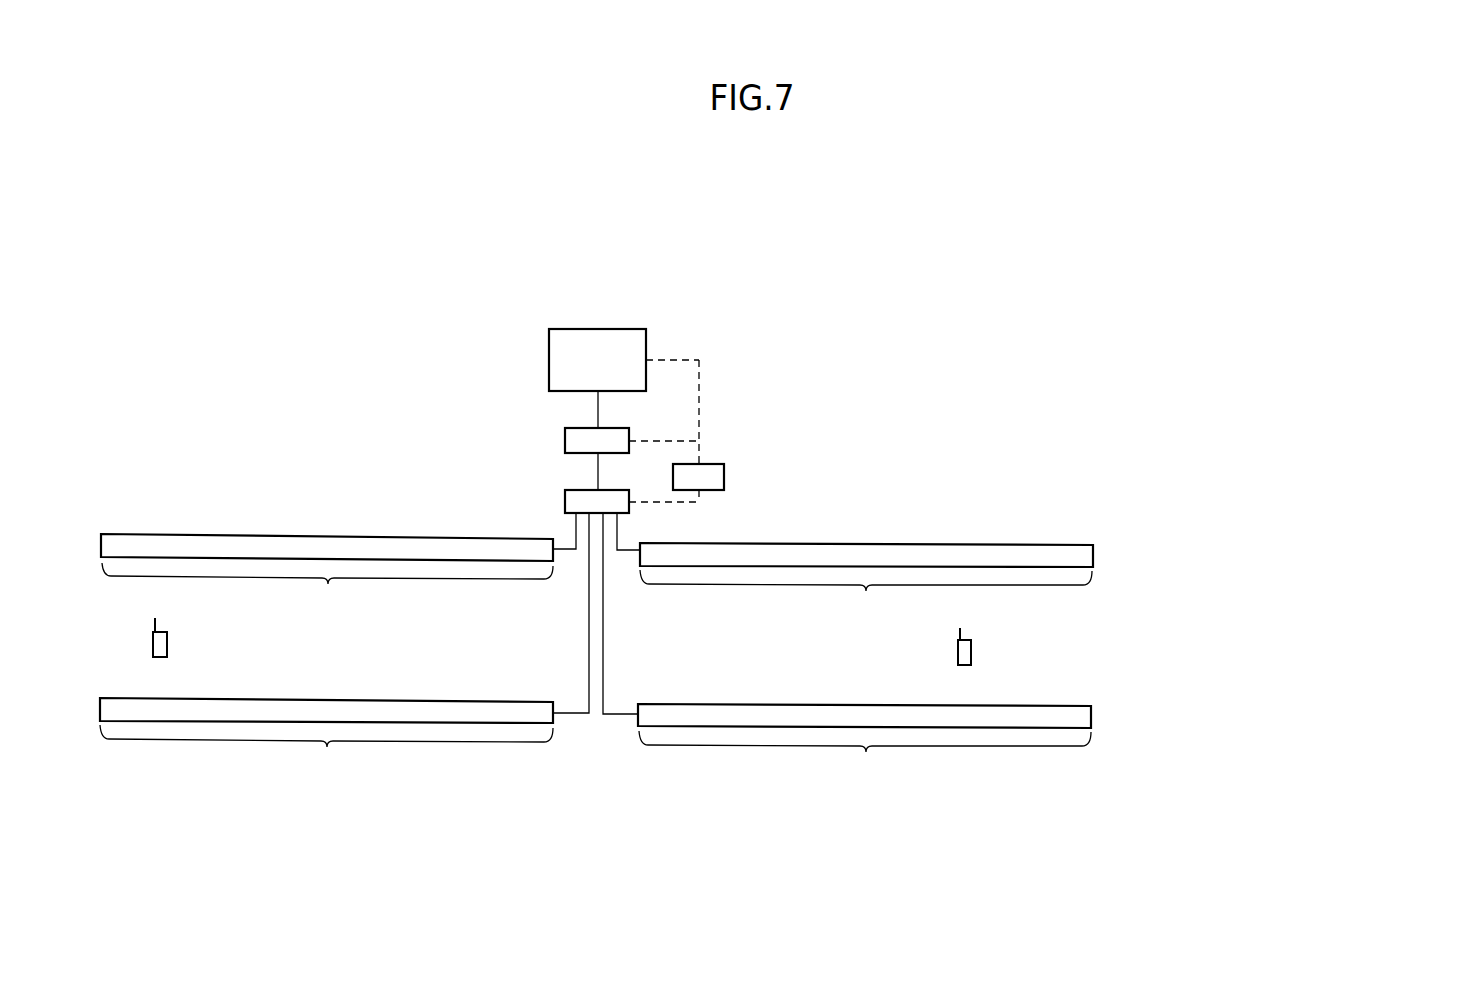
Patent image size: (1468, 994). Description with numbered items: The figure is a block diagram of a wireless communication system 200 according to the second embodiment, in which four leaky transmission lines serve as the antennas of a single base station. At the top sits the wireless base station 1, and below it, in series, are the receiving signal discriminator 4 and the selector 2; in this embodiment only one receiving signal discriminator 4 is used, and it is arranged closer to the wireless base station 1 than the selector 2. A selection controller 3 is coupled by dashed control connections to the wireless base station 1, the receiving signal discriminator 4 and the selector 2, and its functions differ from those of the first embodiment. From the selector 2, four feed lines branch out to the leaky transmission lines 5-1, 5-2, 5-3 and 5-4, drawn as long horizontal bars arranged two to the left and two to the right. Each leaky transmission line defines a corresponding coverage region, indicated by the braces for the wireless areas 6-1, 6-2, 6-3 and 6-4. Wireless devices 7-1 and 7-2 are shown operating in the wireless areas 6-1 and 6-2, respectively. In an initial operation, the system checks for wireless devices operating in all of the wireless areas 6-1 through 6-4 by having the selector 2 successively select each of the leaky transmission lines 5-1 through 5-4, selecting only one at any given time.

The wireless base station 1 is at (646, 337).
The selector 2 is at (538, 489).
The selection controller 3 is at (724, 477).
The receiving signal discriminator 4 is at (538, 424).
The leaky transmission line 5-1 is at (242, 536).
The leaky transmission line 5-2 is at (937, 544).
The leaky transmission line 5-3 is at (415, 700).
The leaky transmission line 5-4 is at (688, 704).
The wireless area 6-1 is at (327, 590).
The wireless area 6-2 is at (866, 597).
The wireless area 6-3 is at (326, 753).
The wireless area 6-4 is at (865, 758).
The wireless device 7-1 is at (168, 643).
The wireless device 7-2 is at (972, 652).
The wireless communication system 200 is at (832, 397).